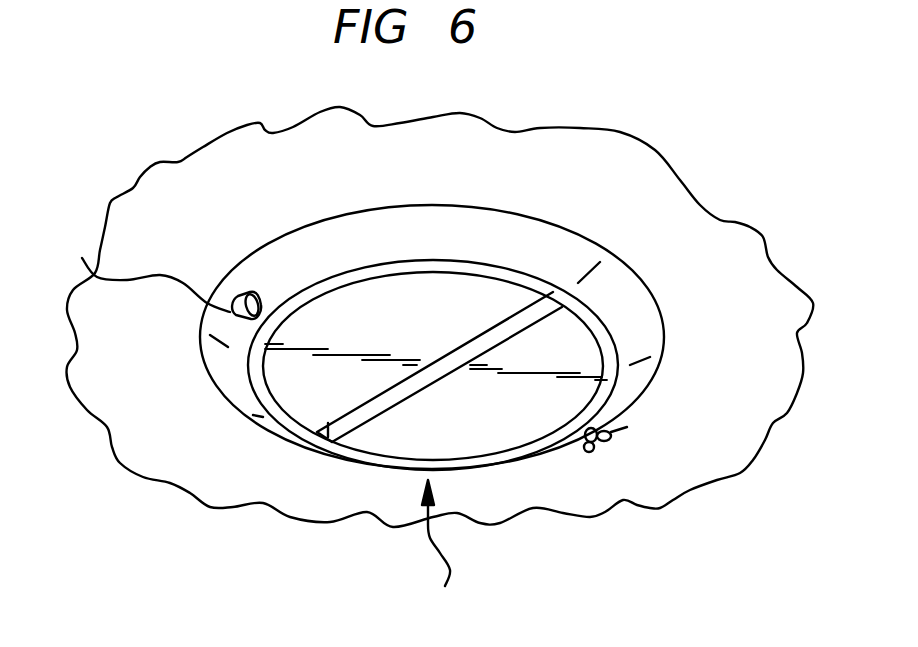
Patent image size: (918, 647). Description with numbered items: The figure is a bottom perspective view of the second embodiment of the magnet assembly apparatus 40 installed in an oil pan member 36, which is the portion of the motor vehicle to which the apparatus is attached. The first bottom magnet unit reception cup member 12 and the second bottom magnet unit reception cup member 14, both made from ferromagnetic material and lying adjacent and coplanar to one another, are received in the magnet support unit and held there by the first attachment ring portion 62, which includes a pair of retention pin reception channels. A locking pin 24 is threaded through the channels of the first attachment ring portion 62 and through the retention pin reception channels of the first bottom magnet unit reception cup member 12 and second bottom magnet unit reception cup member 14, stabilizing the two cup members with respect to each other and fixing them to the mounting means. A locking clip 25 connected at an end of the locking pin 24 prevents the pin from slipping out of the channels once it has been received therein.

The first bottom magnet unit reception cup member 12 is at (305, 383).
The second bottom magnet unit reception cup member 14 is at (513, 430).
The locking pin 24 is at (146, 273).
The locking clip 25 is at (590, 448).
The oil pan member 36 is at (740, 402).
The magnet assembly apparatus 40 is at (446, 557).
The first attachment ring portion 62 is at (620, 297).